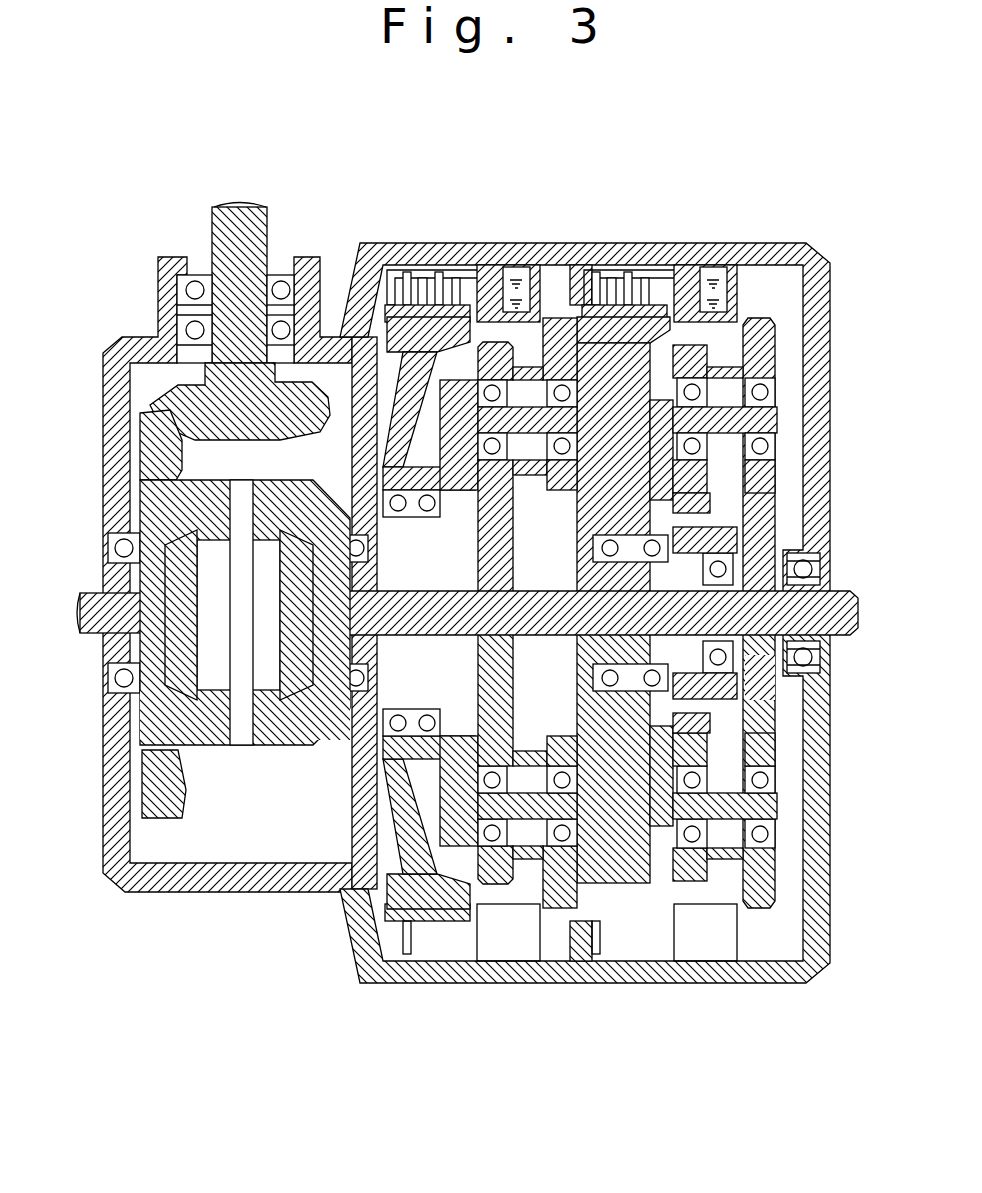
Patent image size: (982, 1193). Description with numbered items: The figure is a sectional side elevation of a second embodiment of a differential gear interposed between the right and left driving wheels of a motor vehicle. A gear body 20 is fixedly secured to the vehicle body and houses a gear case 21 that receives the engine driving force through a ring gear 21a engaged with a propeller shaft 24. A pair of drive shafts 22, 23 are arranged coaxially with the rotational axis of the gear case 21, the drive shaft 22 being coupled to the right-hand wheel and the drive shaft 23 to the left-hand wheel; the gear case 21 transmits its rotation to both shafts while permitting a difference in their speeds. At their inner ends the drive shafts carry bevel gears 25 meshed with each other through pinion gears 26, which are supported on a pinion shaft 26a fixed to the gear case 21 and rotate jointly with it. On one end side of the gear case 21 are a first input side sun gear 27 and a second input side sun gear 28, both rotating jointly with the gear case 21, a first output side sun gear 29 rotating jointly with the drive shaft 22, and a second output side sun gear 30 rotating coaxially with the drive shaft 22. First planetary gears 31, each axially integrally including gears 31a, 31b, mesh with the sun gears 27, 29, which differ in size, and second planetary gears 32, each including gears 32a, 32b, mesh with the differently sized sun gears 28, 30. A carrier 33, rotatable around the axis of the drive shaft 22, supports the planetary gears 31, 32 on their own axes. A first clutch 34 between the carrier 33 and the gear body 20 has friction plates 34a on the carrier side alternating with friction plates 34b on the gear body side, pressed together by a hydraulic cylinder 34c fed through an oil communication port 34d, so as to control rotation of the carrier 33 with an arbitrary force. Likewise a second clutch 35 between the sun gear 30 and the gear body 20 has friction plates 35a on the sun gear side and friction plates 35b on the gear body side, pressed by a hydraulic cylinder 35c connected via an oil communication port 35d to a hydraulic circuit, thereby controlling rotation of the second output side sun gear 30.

The gear body 20 is at (247, 893).
The gear case 21 is at (207, 747).
The ring gear 21a is at (152, 418).
The drive shaft 22 is at (845, 595).
The drive shaft 23 is at (92, 597).
The propeller shaft 24 is at (223, 235).
The bevel gears 25 is at (130, 707).
The pinion gears 26 is at (180, 505).
The pinion shaft 26a is at (236, 745).
The first input side sun gear 27 is at (697, 700).
The second input side sun gear 28 is at (700, 520).
The first output side sun gear 29 is at (758, 677).
The second output side sun gear 30 is at (355, 930).
The first planetary gears 31 is at (777, 357).
The gear 31a is at (660, 950).
The gear 31b is at (755, 950).
The second planetary gears 32 is at (477, 373).
The gear 32a is at (550, 947).
The gear 32b is at (480, 960).
The carrier 33 is at (620, 885).
The first clutch 34 is at (748, 296).
The friction plates 34a is at (640, 318).
The friction plates 34b is at (612, 268).
The hydraulic cylinder 34c is at (735, 300).
The oil communication port 34d is at (713, 267).
The second clutch 35 is at (373, 266).
The friction plates 35a is at (447, 262).
The friction plates 35b is at (405, 268).
The hydraulic cylinder 35c is at (537, 283).
The oil communication port 35d is at (517, 267).